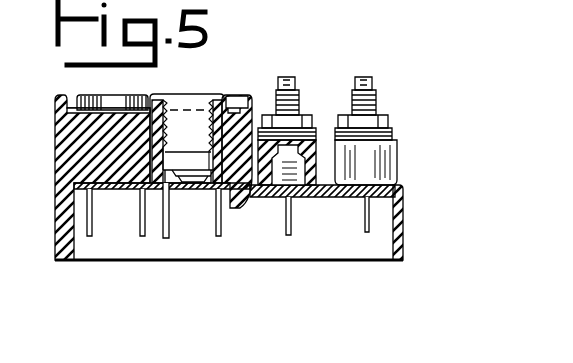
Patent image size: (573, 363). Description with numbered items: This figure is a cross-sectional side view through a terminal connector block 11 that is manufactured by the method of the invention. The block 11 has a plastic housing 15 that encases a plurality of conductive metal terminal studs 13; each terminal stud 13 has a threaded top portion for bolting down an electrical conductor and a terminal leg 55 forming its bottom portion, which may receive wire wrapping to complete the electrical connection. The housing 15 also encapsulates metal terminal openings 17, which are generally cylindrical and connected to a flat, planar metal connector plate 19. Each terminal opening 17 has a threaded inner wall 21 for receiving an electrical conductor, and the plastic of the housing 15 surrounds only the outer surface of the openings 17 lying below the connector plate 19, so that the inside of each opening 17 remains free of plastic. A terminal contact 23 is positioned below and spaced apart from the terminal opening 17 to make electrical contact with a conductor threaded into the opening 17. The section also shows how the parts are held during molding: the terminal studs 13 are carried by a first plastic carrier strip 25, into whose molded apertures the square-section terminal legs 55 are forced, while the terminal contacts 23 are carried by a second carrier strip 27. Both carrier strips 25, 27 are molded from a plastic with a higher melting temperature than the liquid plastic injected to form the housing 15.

The terminal connector block 11 is at (404, 130).
The terminal stud 13 is at (298, 80).
The plastic housing 15 is at (404, 206).
The terminal opening 17 is at (100, 95).
The connector plate 19 is at (72, 96).
The threaded inner wall 21 is at (210, 96).
The terminal contact 23 is at (167, 226).
The first plastic carrier strip 25 is at (306, 198).
The second carrier strip 27 is at (98, 190).
The terminal leg 55 is at (285, 226).